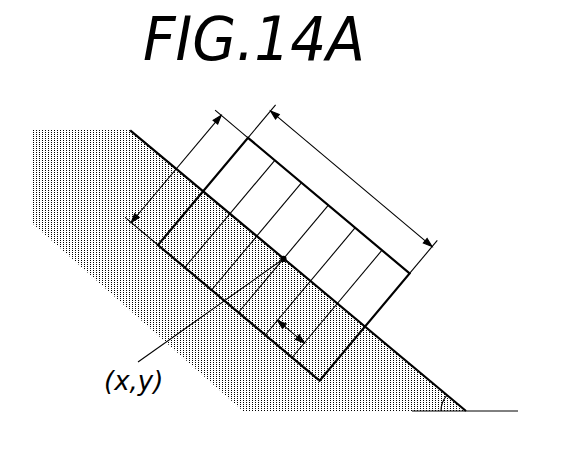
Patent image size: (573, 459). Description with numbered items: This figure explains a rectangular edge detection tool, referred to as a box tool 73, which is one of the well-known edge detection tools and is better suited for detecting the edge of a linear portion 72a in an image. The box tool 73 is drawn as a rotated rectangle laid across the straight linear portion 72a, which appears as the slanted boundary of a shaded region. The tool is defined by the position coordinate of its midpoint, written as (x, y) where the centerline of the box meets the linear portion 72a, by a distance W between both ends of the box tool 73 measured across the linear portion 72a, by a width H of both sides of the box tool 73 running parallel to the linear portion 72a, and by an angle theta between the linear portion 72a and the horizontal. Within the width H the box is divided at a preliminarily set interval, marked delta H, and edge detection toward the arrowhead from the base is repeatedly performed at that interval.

The box tool 73 is at (174, 258).
The linear portion 72a is at (418, 363).
The distance between both ends of the box tool W is at (186, 177).
The width of both sides of the box tool H is at (342, 189).